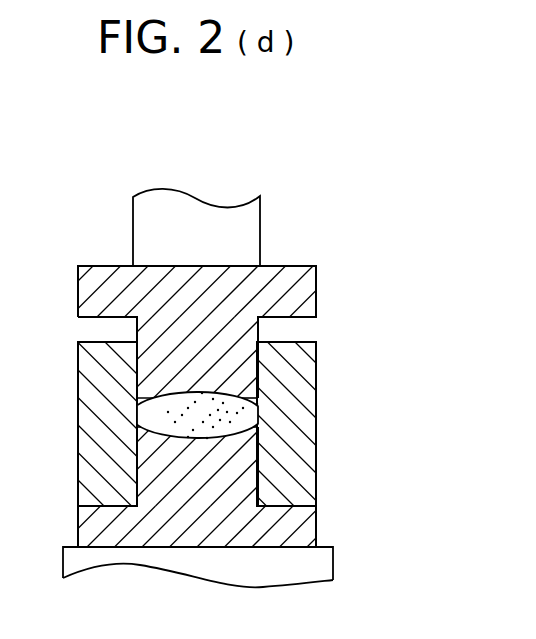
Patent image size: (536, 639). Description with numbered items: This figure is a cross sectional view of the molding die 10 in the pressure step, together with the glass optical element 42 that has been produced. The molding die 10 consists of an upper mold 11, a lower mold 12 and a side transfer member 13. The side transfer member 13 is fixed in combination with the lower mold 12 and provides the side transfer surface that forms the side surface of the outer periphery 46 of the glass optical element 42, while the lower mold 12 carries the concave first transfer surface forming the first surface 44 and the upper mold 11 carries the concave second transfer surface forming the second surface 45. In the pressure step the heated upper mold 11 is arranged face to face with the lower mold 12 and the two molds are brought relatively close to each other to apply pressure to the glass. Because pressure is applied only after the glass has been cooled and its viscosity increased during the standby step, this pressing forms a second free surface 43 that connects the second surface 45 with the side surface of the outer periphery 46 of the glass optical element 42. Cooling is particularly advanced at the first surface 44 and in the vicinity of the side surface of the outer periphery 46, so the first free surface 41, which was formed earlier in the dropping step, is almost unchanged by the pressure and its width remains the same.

The molding die 10 is at (98, 199).
The upper mold 11 is at (285, 297).
The lower mold 12 is at (303, 522).
The side transfer member 13 is at (300, 470).
The first free surface 41 is at (258, 420).
The glass optical element 42 is at (172, 402).
The second free surface 43 is at (258, 402).
The first surface 44 is at (258, 425).
The second surface 45 is at (259, 350).
The side surface of the outer periphery 46 is at (138, 417).